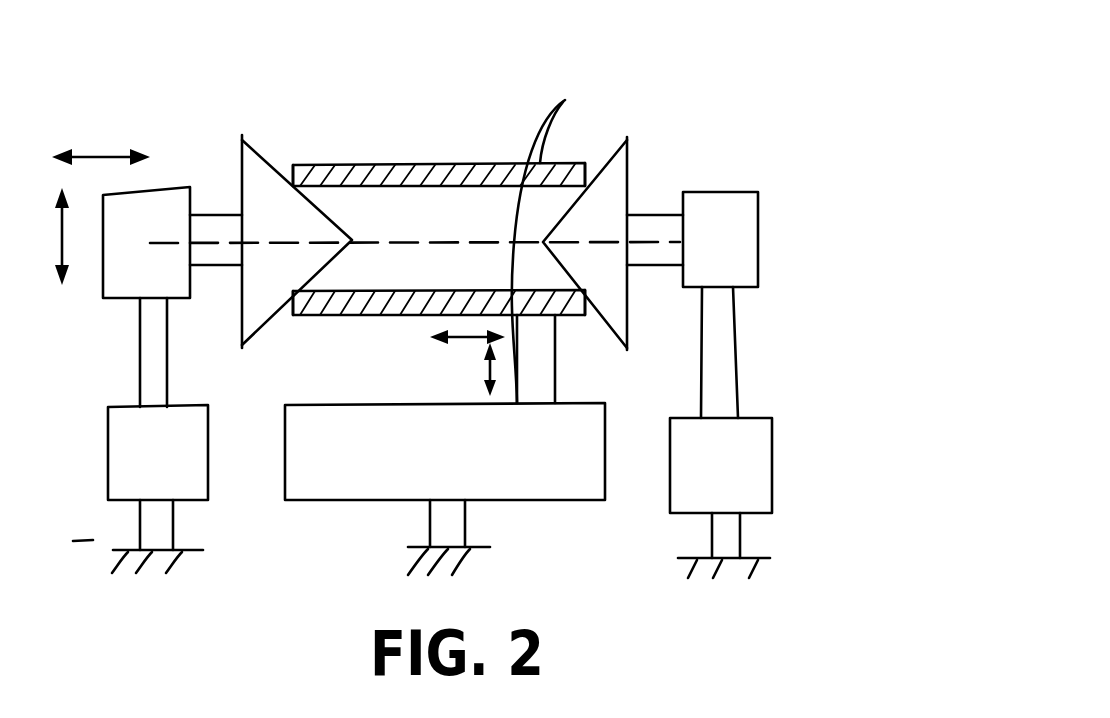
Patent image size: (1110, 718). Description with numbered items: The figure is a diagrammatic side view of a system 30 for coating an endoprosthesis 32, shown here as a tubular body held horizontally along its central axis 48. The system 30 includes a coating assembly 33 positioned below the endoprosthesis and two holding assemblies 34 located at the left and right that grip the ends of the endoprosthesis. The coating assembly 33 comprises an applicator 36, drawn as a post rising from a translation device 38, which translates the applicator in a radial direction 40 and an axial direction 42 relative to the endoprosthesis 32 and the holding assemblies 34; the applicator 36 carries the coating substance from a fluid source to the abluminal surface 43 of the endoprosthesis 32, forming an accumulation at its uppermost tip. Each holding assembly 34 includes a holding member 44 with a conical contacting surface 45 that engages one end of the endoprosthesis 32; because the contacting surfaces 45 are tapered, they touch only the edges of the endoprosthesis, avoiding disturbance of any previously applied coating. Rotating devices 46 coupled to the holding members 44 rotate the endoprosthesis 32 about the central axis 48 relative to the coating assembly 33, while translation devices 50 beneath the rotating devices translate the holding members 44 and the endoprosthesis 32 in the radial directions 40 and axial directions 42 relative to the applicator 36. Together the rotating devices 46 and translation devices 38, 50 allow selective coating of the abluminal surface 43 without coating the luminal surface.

The system 30 is at (724, 50).
The endoprosthesis 32 is at (560, 238).
The coating assembly 33 is at (580, 532).
The holding assemblies 34 is at (237, 528).
The applicator 36 is at (557, 358).
The translation device 38 is at (605, 420).
The radial direction 40 is at (62, 255).
The axial direction 42 is at (100, 157).
The abluminal surface 43 is at (380, 163).
The holding members 44 is at (240, 168).
The conical contacting surfaces 45 is at (286, 165).
The rotating devices 46 is at (123, 303).
The central axis 48 is at (457, 240).
The translation devices 50 is at (120, 410).